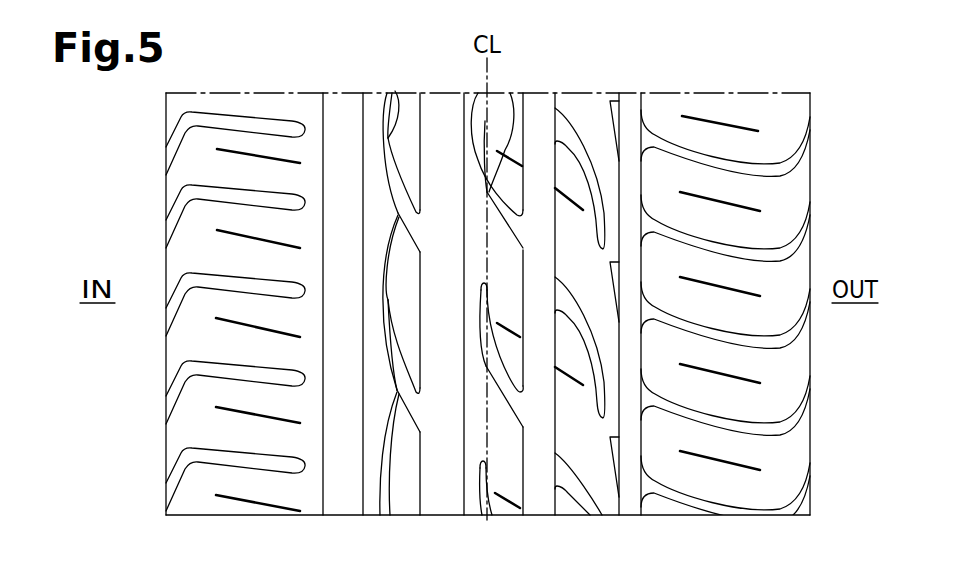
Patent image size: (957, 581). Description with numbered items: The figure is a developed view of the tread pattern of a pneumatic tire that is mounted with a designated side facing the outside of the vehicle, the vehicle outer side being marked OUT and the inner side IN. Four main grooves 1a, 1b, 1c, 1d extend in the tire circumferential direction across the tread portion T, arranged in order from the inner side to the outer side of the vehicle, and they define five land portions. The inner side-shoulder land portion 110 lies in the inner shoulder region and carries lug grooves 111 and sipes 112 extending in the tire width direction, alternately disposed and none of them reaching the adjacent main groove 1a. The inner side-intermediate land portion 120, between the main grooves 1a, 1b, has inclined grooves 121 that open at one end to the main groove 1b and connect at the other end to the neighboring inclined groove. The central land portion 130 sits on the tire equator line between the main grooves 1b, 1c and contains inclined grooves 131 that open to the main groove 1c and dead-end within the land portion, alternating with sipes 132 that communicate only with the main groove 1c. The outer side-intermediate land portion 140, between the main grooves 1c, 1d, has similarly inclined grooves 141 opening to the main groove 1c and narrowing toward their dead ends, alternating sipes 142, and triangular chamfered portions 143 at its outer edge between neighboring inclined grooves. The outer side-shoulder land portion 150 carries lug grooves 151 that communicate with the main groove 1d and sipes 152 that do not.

The tread portion T is at (803, 93).
The inner side-shoulder land portion 110 is at (244, 303).
The lug grooves 111 is at (212, 118).
The sipes 112 is at (275, 157).
The main groove 1a is at (345, 105).
The inner side-intermediate land portion 120 is at (391, 303).
The inclined grooves 121 is at (395, 92).
The main groove 1b is at (445, 102).
The central land portion 130 is at (487, 294).
The inclined grooves 131 is at (471, 110).
The sipes 132 is at (508, 156).
The main groove 1c is at (542, 103).
The outer side-intermediate land portion 140 is at (599, 294).
The inclined grooves 141 is at (566, 162).
The sipes 142 is at (583, 205).
The chamfered portions 143 is at (612, 101).
The main groove 1d is at (632, 103).
The outer side-shoulder land portion 150 is at (725, 303).
The lug grooves 151 is at (725, 316).
The sipes 152 is at (745, 127).